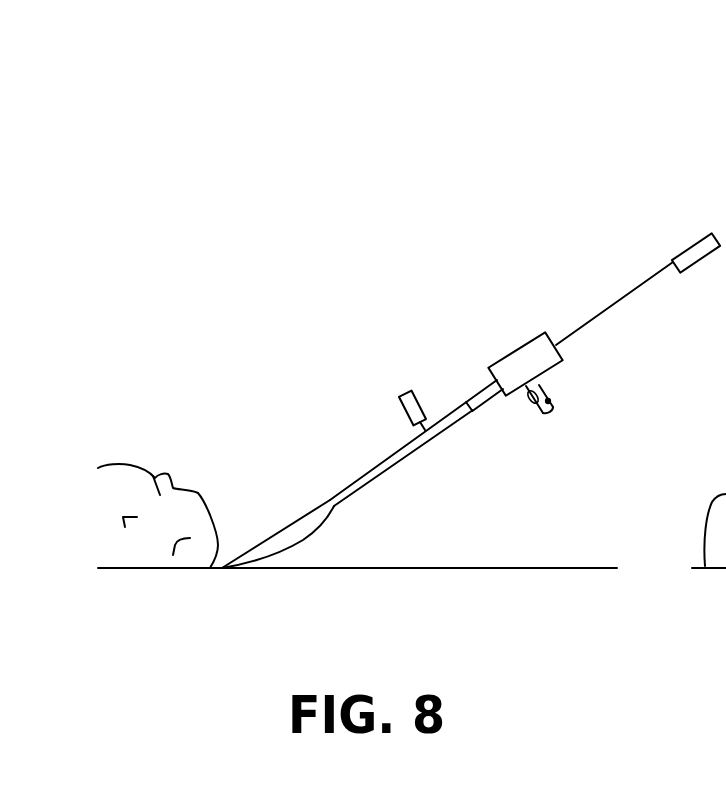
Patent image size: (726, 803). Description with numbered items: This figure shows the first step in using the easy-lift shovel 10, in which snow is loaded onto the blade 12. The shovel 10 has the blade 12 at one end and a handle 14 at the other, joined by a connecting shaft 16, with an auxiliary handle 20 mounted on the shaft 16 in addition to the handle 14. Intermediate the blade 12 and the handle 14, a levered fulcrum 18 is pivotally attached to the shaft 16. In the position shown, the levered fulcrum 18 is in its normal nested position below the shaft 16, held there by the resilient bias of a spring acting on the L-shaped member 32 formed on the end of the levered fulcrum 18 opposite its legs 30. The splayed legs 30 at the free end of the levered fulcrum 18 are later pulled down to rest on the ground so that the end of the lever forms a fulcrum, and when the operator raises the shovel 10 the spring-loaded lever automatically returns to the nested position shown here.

The easy-lift shovel 10 is at (362, 268).
The blade 12 is at (325, 527).
The handle 14 is at (685, 248).
The connecting shaft 16 is at (608, 308).
The levered fulcrum 18 is at (493, 400).
The auxiliary handle 20 is at (405, 398).
The legs 30 is at (405, 457).
The L-shaped member 32 is at (543, 383).